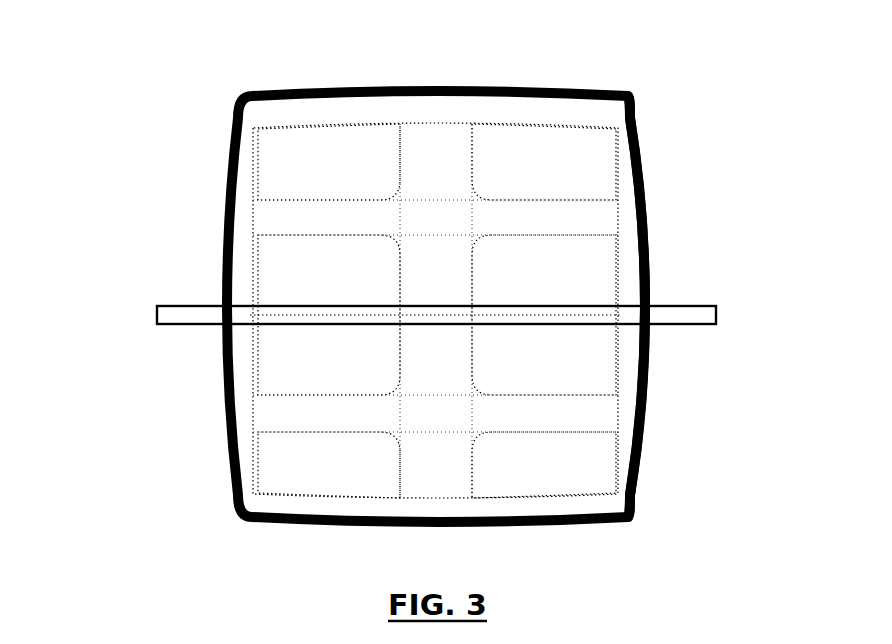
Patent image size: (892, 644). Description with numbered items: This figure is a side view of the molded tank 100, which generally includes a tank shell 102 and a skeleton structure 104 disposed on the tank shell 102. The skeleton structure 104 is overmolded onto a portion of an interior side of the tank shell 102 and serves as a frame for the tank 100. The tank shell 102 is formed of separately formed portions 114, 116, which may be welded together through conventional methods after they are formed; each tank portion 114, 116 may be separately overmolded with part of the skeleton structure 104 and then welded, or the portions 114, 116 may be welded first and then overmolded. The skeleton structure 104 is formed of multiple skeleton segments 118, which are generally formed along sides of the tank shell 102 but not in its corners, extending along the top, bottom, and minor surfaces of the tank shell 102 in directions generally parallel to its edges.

The molded tank 100 is at (166, 51).
The tank shell 102 is at (205, 214).
The skeleton structure 104 is at (463, 407).
The tank portion 114 is at (680, 192).
The tank portion 116 is at (685, 436).
The skeleton segment 118 is at (301, 224).